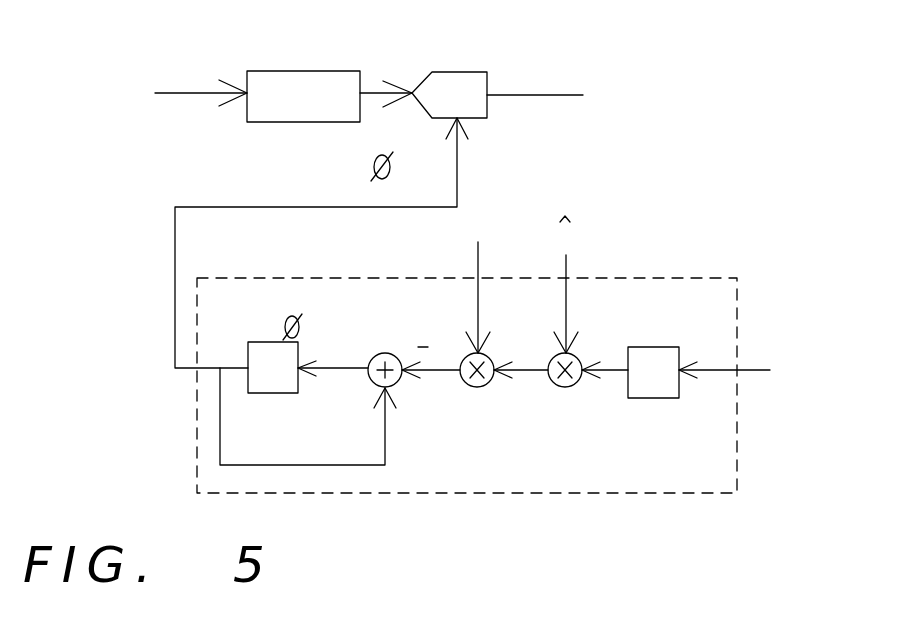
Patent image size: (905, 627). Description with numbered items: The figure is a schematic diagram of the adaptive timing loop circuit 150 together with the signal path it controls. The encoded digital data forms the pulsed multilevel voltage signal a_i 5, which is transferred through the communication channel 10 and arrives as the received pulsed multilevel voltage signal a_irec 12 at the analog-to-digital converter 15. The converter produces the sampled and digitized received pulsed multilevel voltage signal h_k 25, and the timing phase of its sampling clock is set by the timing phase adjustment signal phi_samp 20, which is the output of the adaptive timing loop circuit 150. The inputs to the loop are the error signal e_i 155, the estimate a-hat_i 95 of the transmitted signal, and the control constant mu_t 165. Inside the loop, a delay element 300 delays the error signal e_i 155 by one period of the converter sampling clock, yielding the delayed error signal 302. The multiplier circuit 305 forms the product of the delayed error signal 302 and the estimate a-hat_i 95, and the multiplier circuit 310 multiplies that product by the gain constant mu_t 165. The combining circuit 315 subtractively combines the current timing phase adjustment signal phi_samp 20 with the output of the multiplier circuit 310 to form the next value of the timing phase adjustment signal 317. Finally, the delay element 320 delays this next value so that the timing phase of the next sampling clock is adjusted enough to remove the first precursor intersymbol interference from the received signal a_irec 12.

The pulsed multilevel voltage signal a_i 5 is at (114, 73).
The communication channel 10 is at (290, 71).
The received pulsed multilevel voltage signal a_irec 12 is at (370, 60).
The analog-to-digital converter 15 is at (478, 72).
The timing phase adjustment signal phi_samp 20 is at (372, 165).
The sampled and digitized received pulsed multilevel voltage signal h_k 25 is at (621, 77).
The estimate of the pulsed multilevel voltage signal a-hat_i 95 is at (583, 225).
The adaptive timing loop circuit 150 is at (195, 440).
The error signal e_i 155 is at (785, 389).
The control constant mu_t 165 is at (497, 222).
The delay element 300 is at (660, 345).
The delayed error signal e_i-1 302 is at (632, 308).
The multiplier circuit 305 is at (567, 387).
The multiplier circuit 310 is at (478, 387).
The combining circuit 315 is at (394, 356).
The next value of the timing phase adjustment signal phi_sampn+1 317 is at (332, 368).
The delay element 320 is at (282, 342).